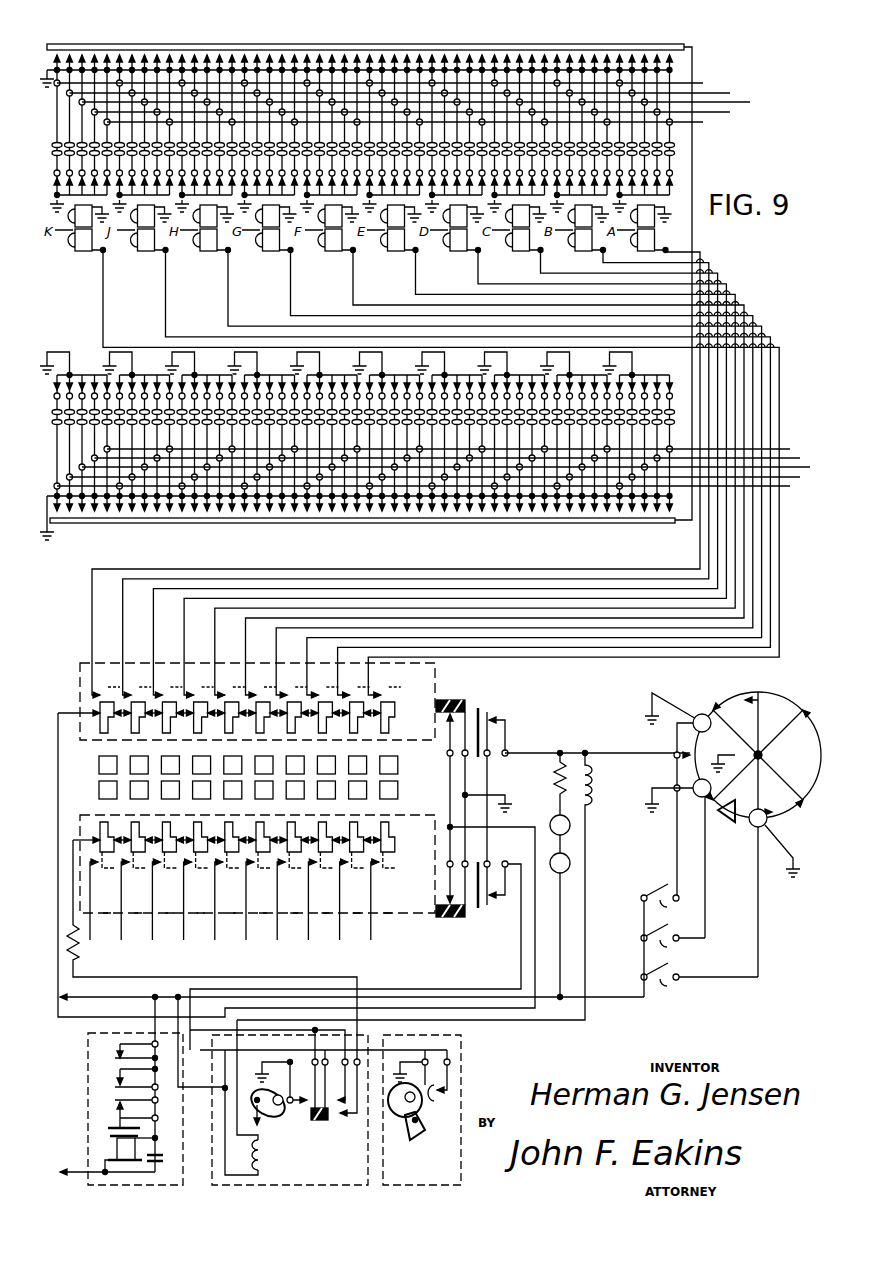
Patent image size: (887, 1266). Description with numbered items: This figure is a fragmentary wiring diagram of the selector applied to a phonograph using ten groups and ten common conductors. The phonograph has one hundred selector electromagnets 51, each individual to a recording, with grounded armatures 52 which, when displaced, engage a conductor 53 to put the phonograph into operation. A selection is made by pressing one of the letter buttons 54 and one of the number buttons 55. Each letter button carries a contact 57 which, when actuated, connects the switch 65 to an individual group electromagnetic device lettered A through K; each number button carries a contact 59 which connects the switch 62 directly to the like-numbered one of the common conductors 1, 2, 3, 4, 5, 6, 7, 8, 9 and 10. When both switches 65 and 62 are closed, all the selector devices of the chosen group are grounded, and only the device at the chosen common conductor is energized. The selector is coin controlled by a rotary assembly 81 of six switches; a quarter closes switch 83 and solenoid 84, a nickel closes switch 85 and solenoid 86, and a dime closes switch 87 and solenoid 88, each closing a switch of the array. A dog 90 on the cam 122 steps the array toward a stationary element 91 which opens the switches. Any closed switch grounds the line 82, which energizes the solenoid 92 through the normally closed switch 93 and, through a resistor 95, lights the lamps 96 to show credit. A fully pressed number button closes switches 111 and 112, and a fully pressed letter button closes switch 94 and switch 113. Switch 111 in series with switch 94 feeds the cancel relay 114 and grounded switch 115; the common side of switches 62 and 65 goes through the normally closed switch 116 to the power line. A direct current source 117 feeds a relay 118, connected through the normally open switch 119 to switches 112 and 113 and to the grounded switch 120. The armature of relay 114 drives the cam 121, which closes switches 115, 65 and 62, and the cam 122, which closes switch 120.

The common conductor 1 is at (454, 450).
The common conductor 2 is at (410, 122).
The common conductor 3 is at (454, 460).
The common conductor 4 is at (419, 112).
The common conductor 5 is at (452, 469).
The common conductor 6 is at (422, 102).
The common conductor 7 is at (442, 479).
The common conductor 8 is at (406, 93).
The common conductor 9 is at (429, 489).
The common conductor 10 is at (390, 83).
The electromagnet 51 is at (60, 150).
The armature 52 is at (87, 45).
The conductor 53 is at (137, 70).
The buttons 54 is at (99, 765).
The buttons 55 is at (99, 790).
The contact 57 is at (118, 675).
The contact 59 is at (104, 852).
The switch 62 is at (347, 1098).
The switch 65 is at (317, 1118).
The rotary assembly 81 is at (803, 802).
The line 82 is at (606, 744).
The switch 83 is at (699, 953).
The solenoid 84 is at (755, 829).
The switch 85 is at (673, 944).
The solenoid 86 is at (696, 797).
The switch 87 is at (666, 904).
The solenoid 88 is at (695, 712).
The dog 90 is at (424, 1131).
The stationary element 91 is at (735, 808).
The solenoid 92 is at (596, 786).
The switch 93 is at (125, 1077).
The switch 94 is at (496, 717).
The resistor 95 is at (554, 782).
The lamps 96 is at (552, 835).
The switch 111 is at (505, 906).
The switch 112 is at (462, 918).
The switch 113 is at (466, 700).
The cancel relay 114 is at (267, 1164).
The switch 115 is at (304, 1092).
The switch 116 is at (95, 1062).
The source of direct current 117 is at (88, 1175).
The relay 118 is at (95, 1135).
The switch 119 is at (92, 1112).
The switch 120 is at (421, 1102).
The cam 121 is at (272, 1118).
The cam 122 is at (408, 1128).